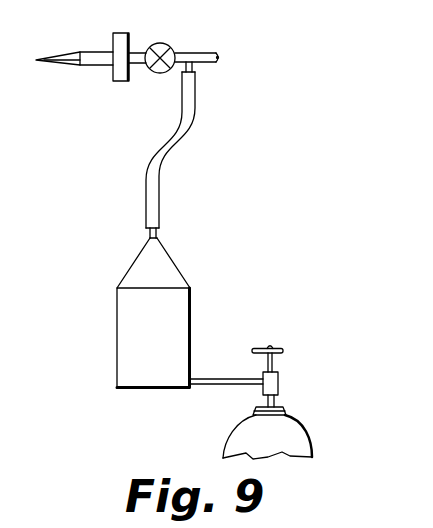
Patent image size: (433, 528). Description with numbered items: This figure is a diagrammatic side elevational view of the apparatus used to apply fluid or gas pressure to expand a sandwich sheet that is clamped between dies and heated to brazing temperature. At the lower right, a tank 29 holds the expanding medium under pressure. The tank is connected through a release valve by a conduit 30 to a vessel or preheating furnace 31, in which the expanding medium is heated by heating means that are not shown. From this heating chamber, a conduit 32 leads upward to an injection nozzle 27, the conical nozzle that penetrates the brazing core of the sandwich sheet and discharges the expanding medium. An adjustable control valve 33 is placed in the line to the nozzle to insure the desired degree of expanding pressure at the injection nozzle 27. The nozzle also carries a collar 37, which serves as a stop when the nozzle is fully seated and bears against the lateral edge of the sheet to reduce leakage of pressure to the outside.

The injection nozzle 27 is at (95, 50).
The collar 37 is at (120, 72).
The adjustable control valve 33 is at (163, 47).
The conduit 32 is at (157, 178).
The vessel or preheating furnace 31 is at (182, 318).
The conduit 30 is at (228, 386).
The tank 29 is at (293, 442).